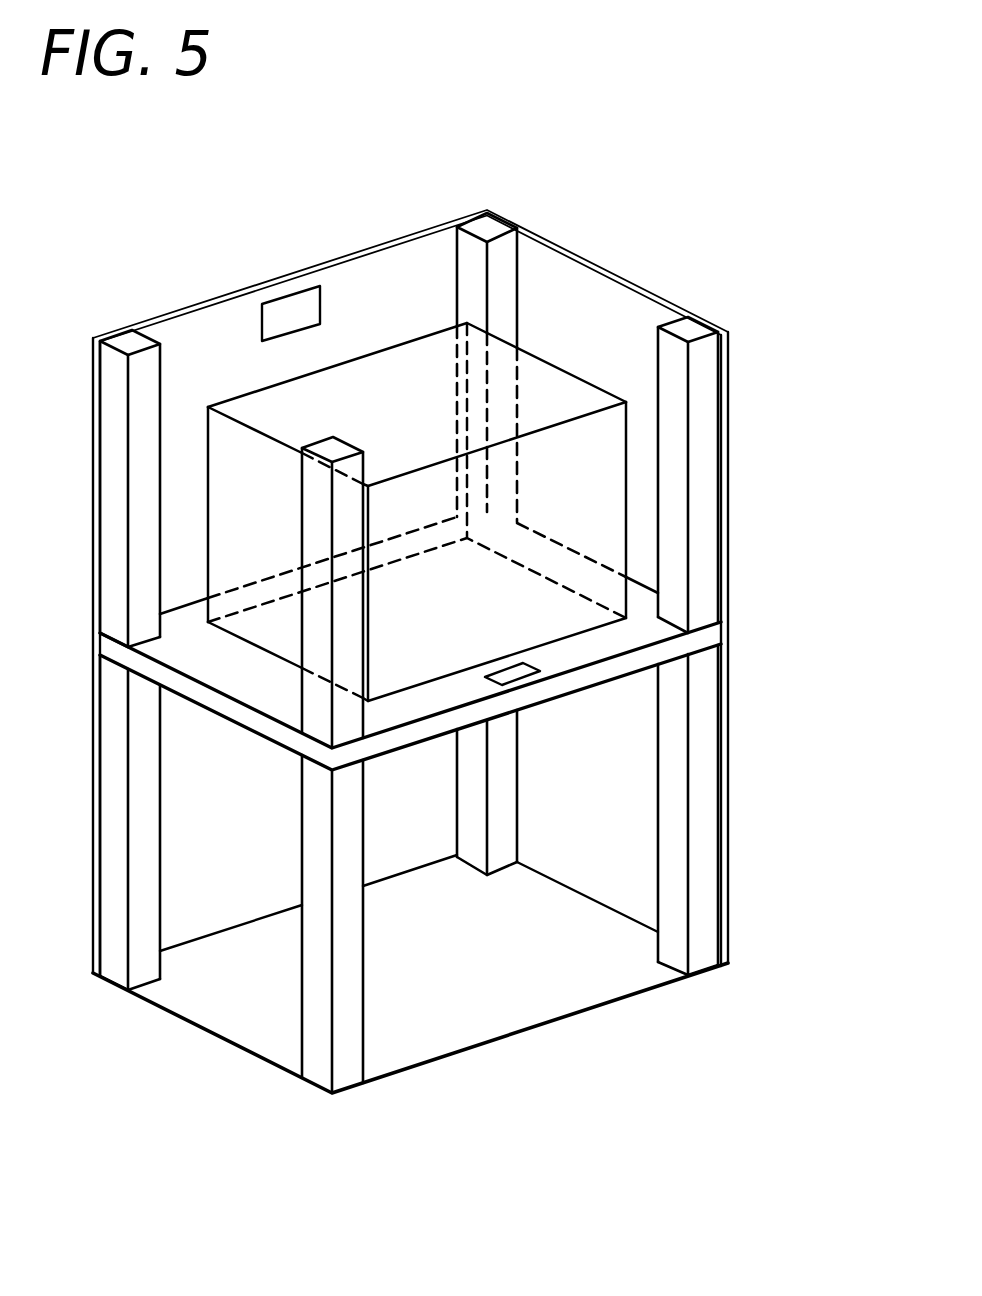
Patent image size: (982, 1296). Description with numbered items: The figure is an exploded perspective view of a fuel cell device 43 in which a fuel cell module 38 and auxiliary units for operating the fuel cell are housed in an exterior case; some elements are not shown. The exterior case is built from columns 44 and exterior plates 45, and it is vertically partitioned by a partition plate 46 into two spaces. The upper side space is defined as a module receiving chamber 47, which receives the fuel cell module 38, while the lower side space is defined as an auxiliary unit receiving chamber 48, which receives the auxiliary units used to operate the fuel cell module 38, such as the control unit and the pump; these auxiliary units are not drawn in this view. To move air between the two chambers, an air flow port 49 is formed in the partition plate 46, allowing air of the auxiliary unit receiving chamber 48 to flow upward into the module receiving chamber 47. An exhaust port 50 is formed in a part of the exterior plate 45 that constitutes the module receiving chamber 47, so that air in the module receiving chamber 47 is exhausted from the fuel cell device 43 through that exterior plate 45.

The fuel cell module 38 is at (557, 383).
The fuel cell device 43 is at (342, 150).
The columns 44 is at (128, 340).
The exterior plates 45 is at (542, 233).
The partition plate 46 is at (468, 645).
The module receiving chamber 47 is at (568, 302).
The auxiliary unit receiving chamber 48 is at (212, 823).
The air flow port 49 is at (523, 670).
The exhaust port 50 is at (283, 312).